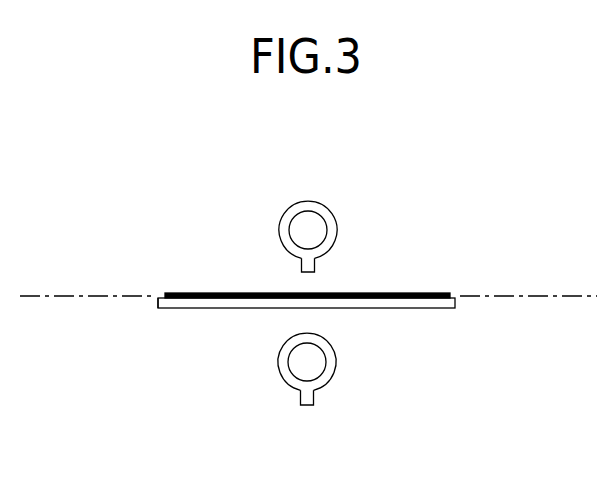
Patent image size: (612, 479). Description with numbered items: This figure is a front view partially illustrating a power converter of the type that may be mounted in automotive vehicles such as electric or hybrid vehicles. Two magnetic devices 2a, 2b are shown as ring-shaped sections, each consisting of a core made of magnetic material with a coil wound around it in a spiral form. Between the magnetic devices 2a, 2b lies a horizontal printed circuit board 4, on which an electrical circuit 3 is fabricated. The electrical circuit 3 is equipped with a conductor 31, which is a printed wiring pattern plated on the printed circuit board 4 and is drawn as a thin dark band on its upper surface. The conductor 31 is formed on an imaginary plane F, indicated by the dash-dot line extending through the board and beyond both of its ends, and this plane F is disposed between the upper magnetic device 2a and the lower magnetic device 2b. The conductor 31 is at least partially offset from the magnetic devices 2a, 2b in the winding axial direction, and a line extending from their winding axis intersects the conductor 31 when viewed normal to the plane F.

The magnetic device 2a is at (286, 187).
The magnetic device 2b is at (287, 390).
The electrical circuit 3 is at (418, 294).
The conductor 31 is at (376, 288).
The printed circuit board 4 is at (159, 300).
The imaginary plane F is at (541, 297).